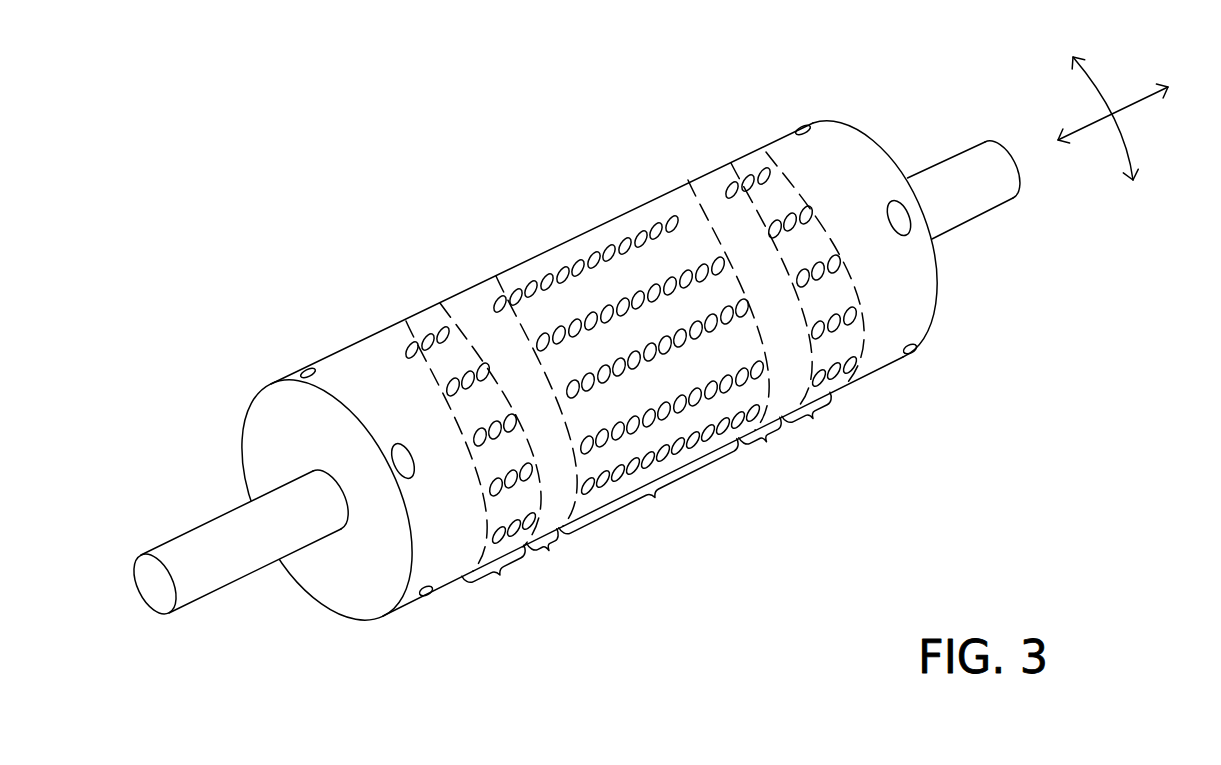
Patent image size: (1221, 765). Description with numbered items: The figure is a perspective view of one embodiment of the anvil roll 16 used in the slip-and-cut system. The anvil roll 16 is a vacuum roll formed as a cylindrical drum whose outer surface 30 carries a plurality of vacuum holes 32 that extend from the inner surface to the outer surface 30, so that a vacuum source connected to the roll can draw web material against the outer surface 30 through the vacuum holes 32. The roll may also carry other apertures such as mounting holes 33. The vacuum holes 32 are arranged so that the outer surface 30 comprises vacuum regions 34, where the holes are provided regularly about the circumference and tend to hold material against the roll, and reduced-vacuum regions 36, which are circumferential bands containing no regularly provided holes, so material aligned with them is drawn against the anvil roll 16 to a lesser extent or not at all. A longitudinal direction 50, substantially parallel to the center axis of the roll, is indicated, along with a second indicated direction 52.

The anvil roll 16 is at (358, 220).
The outer surface 30 is at (447, 313).
The vacuum holes 32 is at (663, 340).
The mounting holes 33 is at (808, 127).
The vacuum regions 34 is at (649, 500).
The reduced-vacuum regions 36 is at (657, 502).
The longitudinal direction 50 is at (1142, 103).
The rotational direction arrow 52 is at (1125, 140).